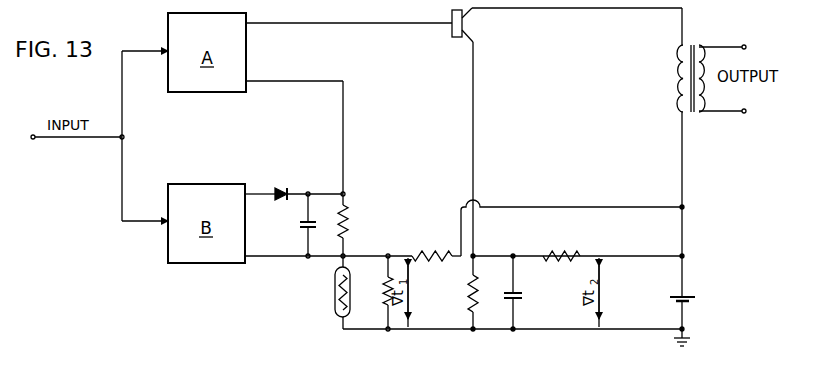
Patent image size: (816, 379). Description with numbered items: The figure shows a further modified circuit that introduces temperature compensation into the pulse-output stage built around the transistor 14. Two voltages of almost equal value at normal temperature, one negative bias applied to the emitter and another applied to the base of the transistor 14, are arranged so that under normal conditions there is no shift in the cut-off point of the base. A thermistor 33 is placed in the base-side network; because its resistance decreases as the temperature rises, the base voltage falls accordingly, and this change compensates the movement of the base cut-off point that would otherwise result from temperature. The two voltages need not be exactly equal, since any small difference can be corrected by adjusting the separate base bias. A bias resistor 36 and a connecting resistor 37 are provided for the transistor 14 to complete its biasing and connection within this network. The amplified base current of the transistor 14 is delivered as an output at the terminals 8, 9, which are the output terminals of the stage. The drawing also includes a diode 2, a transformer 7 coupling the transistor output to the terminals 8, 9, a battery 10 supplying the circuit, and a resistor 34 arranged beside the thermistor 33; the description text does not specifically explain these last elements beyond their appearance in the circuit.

The diode 2 is at (278, 191).
The output transformer 7 is at (697, 49).
The output terminal 8 is at (731, 48).
The output terminal 9 is at (731, 114).
The battery 10 is at (694, 301).
The transistor 14 is at (456, 32).
The thermistor 33 is at (334, 301).
The resistor 34 is at (385, 292).
The bias resistor 36 is at (469, 290).
The connecting resistor 37 is at (556, 254).